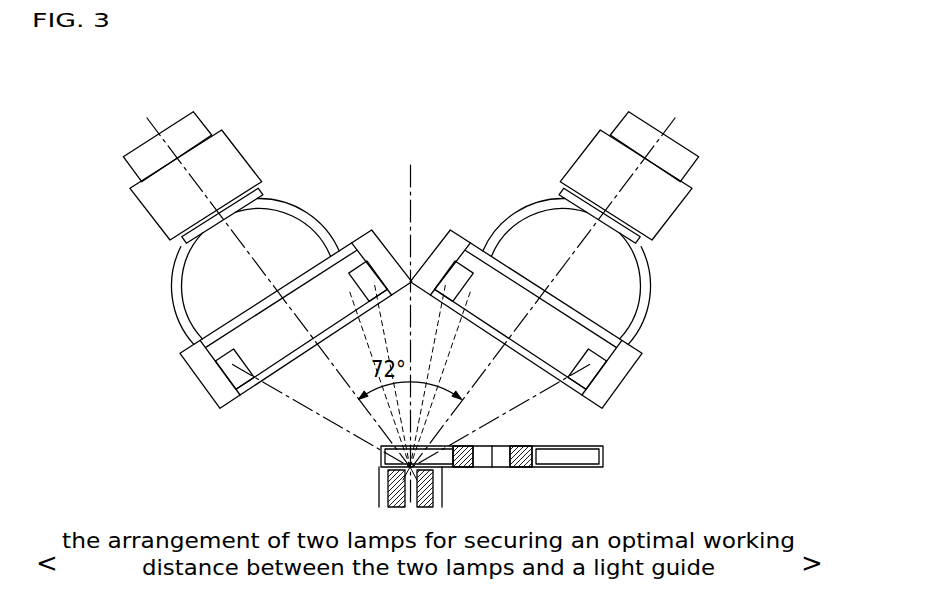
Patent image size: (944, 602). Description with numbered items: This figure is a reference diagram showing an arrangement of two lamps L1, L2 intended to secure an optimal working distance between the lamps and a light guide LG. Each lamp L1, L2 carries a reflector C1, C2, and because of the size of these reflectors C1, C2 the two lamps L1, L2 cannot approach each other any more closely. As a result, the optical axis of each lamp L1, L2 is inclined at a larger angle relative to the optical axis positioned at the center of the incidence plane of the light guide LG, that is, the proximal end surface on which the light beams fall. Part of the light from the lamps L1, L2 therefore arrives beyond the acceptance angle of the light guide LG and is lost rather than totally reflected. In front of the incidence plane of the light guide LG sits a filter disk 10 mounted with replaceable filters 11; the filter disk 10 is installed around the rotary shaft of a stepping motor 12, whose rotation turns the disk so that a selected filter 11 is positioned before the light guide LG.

The lamp L1 is at (245, 152).
The lamp L2 is at (588, 147).
The reflector C1 is at (327, 210).
The reflector C2 is at (517, 197).
The filter disk 10 is at (606, 452).
The replaceable filter 11 is at (452, 447).
The stepping motor 12 is at (410, 376).
The light guide LG is at (442, 483).